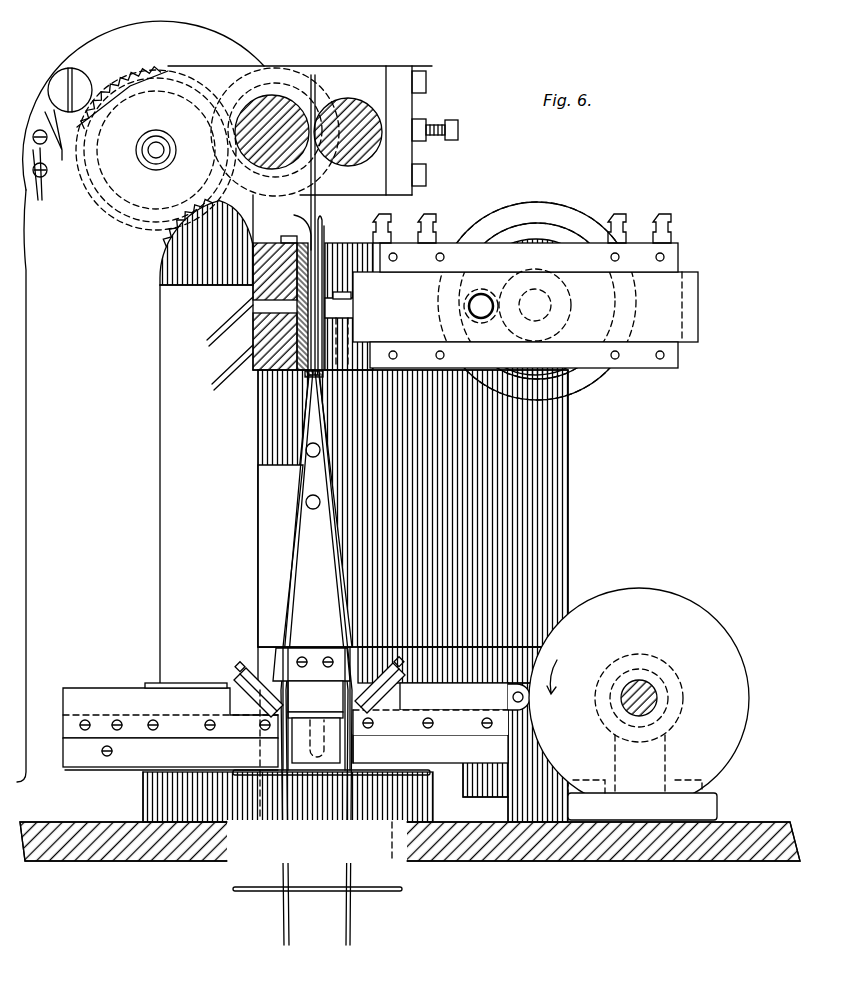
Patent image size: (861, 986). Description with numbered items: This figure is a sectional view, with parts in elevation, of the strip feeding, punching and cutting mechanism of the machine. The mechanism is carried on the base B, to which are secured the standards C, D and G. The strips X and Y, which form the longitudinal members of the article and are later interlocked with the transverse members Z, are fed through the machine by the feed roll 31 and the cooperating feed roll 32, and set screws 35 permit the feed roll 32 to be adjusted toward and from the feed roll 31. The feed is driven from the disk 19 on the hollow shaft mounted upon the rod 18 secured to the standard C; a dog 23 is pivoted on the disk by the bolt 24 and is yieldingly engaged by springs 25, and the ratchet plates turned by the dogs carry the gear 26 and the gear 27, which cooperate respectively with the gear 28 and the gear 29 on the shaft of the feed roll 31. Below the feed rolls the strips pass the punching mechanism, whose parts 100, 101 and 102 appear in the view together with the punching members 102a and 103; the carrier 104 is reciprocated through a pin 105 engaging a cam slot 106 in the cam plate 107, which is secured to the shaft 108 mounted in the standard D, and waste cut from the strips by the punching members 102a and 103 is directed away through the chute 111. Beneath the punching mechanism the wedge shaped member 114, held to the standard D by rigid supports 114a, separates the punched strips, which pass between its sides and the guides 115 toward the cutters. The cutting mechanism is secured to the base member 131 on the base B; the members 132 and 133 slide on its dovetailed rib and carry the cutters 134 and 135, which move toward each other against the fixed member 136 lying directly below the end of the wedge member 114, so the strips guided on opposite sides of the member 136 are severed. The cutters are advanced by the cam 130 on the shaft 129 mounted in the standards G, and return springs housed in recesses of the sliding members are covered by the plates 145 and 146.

The disk 19 is at (108, 36).
The gear 27 is at (140, 75).
The gear 26 is at (132, 203).
The rod 18 is at (157, 145).
The bolt or shaft 24 is at (56, 85).
The dog 23 is at (52, 116).
The springs 25 is at (33, 135).
The gear 28 is at (246, 90).
The gear 29 is at (292, 170).
The feed roll 31 is at (272, 108).
The feed roll 32 is at (350, 104).
The set screws 35 is at (458, 130).
The guide 100 is at (325, 236).
The hook guide 101 is at (296, 223).
The block 102 is at (253, 282).
The punching member 102a is at (302, 307).
The punching member 103 is at (336, 296).
The carrier 104 is at (700, 316).
The pin 105 is at (474, 300).
The cam slot 106 is at (556, 245).
The cam plate 107 is at (512, 215).
The shaft 108 is at (542, 315).
The chute 111 is at (203, 372).
The wedge shaped member 114 is at (313, 480).
The rigid supports 114a is at (306, 503).
The guides 115 is at (300, 467).
The shaft 129 is at (645, 680).
The cam 130 is at (636, 593).
The base member 131 is at (127, 768).
The sliding member 132 is at (465, 696).
The sliding member 133 is at (170, 713).
The cutter 134 is at (380, 686).
The cutter 135 is at (250, 670).
The fixed member 136 is at (303, 716).
The plate 145 is at (430, 728).
The plate 146 is at (196, 677).
The standard C is at (135, 486).
The standard D is at (566, 560).
The base B is at (690, 863).
The standards G is at (660, 768).
The strip x is at (352, 922).
The strip y is at (311, 75).
The transverse member z is at (381, 768).